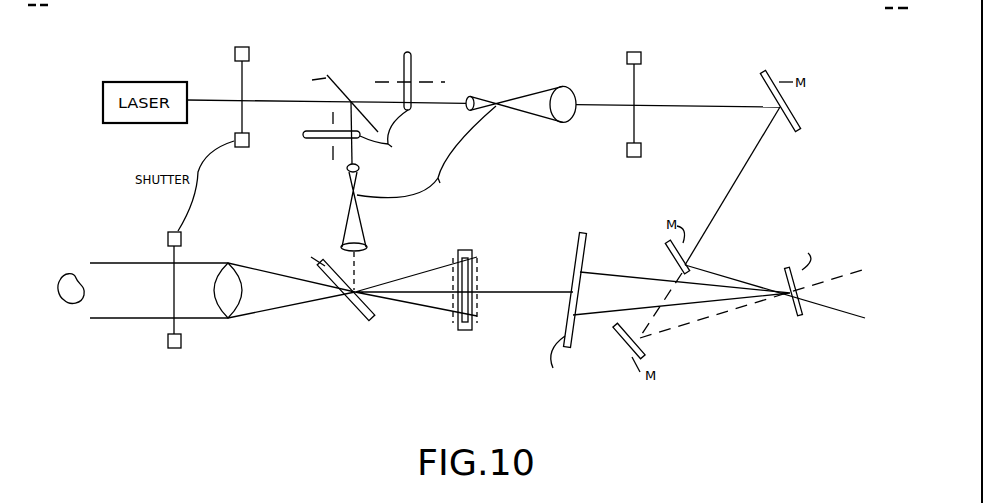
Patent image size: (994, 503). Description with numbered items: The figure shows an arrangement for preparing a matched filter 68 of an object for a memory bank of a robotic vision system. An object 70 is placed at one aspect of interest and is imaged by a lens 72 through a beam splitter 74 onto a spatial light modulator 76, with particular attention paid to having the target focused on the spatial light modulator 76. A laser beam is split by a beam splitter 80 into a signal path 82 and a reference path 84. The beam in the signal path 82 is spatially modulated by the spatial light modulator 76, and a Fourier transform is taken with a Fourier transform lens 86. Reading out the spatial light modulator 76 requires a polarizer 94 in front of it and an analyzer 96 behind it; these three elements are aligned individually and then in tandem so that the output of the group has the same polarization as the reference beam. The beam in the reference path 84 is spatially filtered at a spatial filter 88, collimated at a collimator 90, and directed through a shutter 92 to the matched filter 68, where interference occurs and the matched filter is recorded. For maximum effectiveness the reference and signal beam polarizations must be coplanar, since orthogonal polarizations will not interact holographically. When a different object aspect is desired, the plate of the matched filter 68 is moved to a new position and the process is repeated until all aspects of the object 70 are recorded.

The matched filter 68 is at (795, 312).
The object 70 is at (61, 280).
The lens 72 is at (240, 318).
The beam splitter 74 is at (369, 318).
The spatial light modulator 76 is at (468, 251).
The beam splitter 80 is at (330, 74).
The signal path 82 is at (352, 152).
The reference path 84 is at (447, 100).
The Fourier transform lens 86 is at (586, 238).
The spatial filter 88 is at (414, 53).
The collimator 90 is at (536, 110).
The shutter 92 is at (642, 54).
The polarizer 94 is at (456, 320).
The analyzer 96 is at (478, 264).